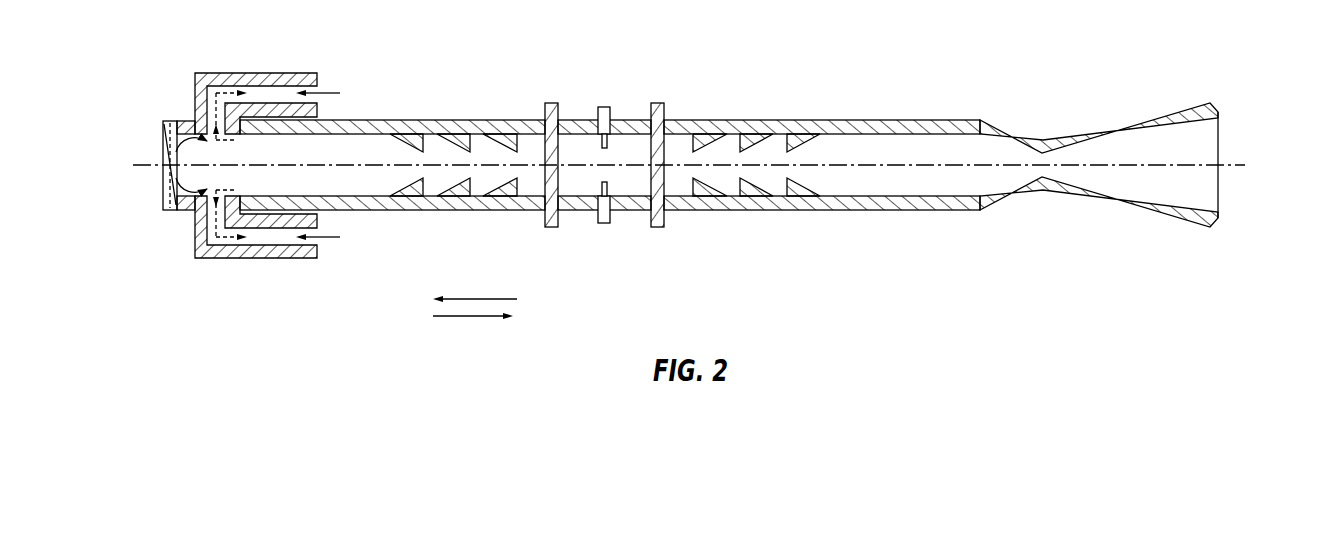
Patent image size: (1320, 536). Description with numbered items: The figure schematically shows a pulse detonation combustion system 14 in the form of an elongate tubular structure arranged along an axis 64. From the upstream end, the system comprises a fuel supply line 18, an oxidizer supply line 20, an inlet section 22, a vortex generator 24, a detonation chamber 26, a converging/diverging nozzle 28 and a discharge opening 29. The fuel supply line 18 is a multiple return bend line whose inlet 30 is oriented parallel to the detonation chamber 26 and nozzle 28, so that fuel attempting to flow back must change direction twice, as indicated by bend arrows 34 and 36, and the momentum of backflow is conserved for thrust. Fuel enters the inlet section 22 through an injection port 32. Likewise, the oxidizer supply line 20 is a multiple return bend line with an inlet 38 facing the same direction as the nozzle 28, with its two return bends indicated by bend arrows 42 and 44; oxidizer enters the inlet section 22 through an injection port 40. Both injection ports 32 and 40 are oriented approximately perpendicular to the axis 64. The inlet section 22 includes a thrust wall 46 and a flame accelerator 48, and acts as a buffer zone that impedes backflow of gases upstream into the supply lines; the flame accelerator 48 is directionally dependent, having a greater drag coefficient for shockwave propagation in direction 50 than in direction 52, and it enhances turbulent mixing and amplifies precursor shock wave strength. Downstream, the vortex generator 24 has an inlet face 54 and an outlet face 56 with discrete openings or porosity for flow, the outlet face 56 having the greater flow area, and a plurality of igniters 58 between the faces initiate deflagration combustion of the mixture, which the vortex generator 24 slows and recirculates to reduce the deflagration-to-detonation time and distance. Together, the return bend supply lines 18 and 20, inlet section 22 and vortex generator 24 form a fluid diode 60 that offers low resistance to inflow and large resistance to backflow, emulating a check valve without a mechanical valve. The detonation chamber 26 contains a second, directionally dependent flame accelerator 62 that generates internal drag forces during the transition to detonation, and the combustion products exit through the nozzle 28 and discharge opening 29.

The pulse detonation combustion system 14 is at (954, 38).
The fuel supply line 18 is at (240, 72).
The oxidizer supply line 20 is at (253, 258).
The inlet section 22 is at (387, 121).
The vortex generator 24 is at (636, 238).
The detonation chamber 26 is at (860, 121).
The converging/diverging nozzle 28 is at (1048, 236).
The discharge opening 29 is at (1222, 138).
The inlet 30 is at (321, 80).
The injection port 32 is at (177, 123).
The bend arrow 34 is at (232, 142).
The bend arrow 36 is at (223, 92).
The inlet 38 is at (322, 250).
The injection port 40 is at (177, 200).
The bend arrow 42 is at (232, 188).
The bend arrow 44 is at (214, 250).
The thrust wall 46 is at (163, 152).
The flame accelerator 48 is at (405, 130).
The direction 50 is at (478, 298).
The direction 52 is at (470, 316).
The inlet face 54 is at (552, 103).
The outlet face 56 is at (658, 103).
The igniter 58 is at (603, 107).
The fluid diode 60 is at (724, 40).
The flame accelerator 62 is at (708, 128).
The axis 64 is at (900, 165).